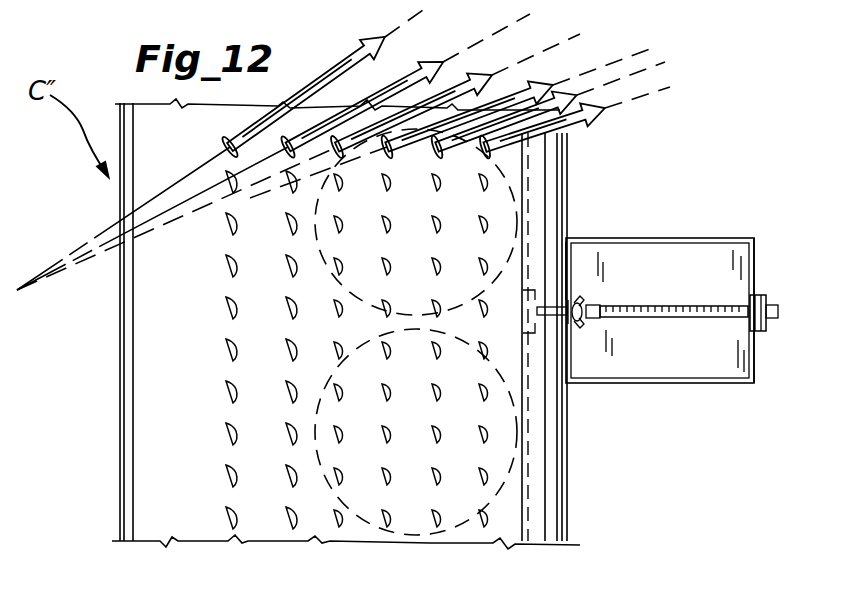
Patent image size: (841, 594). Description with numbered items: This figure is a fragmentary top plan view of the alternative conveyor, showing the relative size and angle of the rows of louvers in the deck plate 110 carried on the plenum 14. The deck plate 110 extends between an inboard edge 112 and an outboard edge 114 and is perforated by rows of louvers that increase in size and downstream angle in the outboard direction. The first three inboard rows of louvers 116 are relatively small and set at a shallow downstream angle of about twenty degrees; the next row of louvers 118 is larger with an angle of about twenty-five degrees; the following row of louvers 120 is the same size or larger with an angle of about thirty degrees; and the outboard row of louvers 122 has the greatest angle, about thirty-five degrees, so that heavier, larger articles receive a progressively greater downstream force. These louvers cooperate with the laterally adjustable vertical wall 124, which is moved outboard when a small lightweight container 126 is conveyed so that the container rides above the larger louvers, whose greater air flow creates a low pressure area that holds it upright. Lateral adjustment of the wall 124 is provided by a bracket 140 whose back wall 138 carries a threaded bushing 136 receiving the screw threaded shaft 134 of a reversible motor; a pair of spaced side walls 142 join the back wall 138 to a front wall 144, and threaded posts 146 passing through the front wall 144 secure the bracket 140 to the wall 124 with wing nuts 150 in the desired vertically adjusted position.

The plenum 14 is at (565, 520).
The deck plate 110 is at (134, 462).
The inboard edge 112 is at (558, 428).
The outboard edge 114 is at (128, 378).
The louvers 116 is at (396, 535).
The louvers 118 is at (315, 537).
The louvers 120 is at (265, 537).
The louvers 122 is at (227, 530).
The vertical wall 124 is at (532, 531).
The container 126 is at (318, 250).
The screw threaded shaft 134 is at (672, 318).
The threaded bushing 136 is at (765, 340).
The back wall 138 is at (770, 213).
The bracket 140 is at (652, 275).
The side walls 142 is at (676, 238).
The front wall 144 is at (566, 262).
The threaded posts 146 is at (593, 306).
The wing nuts 150 is at (582, 324).